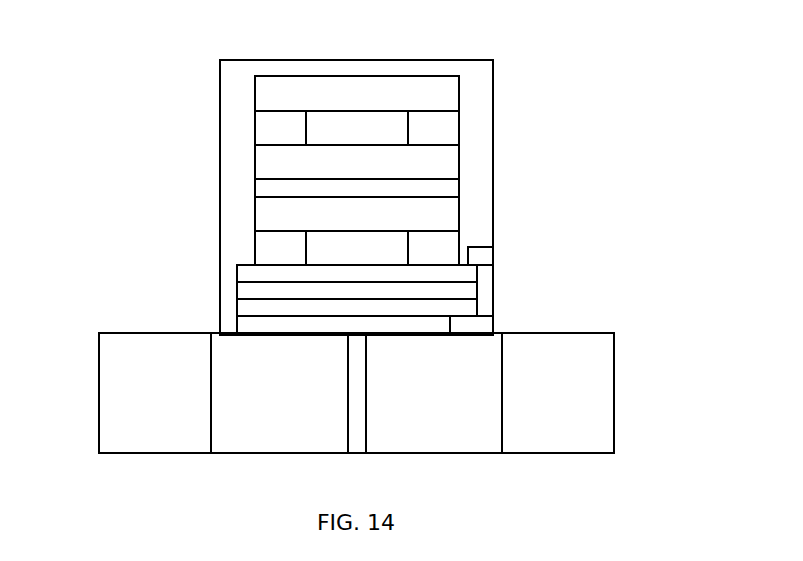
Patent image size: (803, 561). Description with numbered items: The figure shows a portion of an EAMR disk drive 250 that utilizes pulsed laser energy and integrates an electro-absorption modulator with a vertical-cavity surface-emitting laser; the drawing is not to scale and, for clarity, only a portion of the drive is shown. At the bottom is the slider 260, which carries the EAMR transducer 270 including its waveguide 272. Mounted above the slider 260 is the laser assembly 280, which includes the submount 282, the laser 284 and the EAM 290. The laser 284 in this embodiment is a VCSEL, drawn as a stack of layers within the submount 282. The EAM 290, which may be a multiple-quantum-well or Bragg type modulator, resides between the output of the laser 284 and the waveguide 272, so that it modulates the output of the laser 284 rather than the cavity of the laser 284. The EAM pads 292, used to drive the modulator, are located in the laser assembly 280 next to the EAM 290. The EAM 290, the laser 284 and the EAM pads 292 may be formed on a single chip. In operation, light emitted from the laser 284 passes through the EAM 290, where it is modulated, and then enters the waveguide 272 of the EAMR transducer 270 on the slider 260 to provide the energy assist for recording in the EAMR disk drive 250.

The EAMR disk drive 250 is at (335, 37).
The slider 260 is at (645, 384).
The EAMR transducer 270 is at (502, 401).
The waveguide 272 is at (348, 419).
The laser assembly 280 is at (107, 142).
The submount 282 is at (493, 198).
The laser 284 is at (240, 192).
The EAM 290 is at (226, 300).
The EAM pads 292 is at (493, 322).